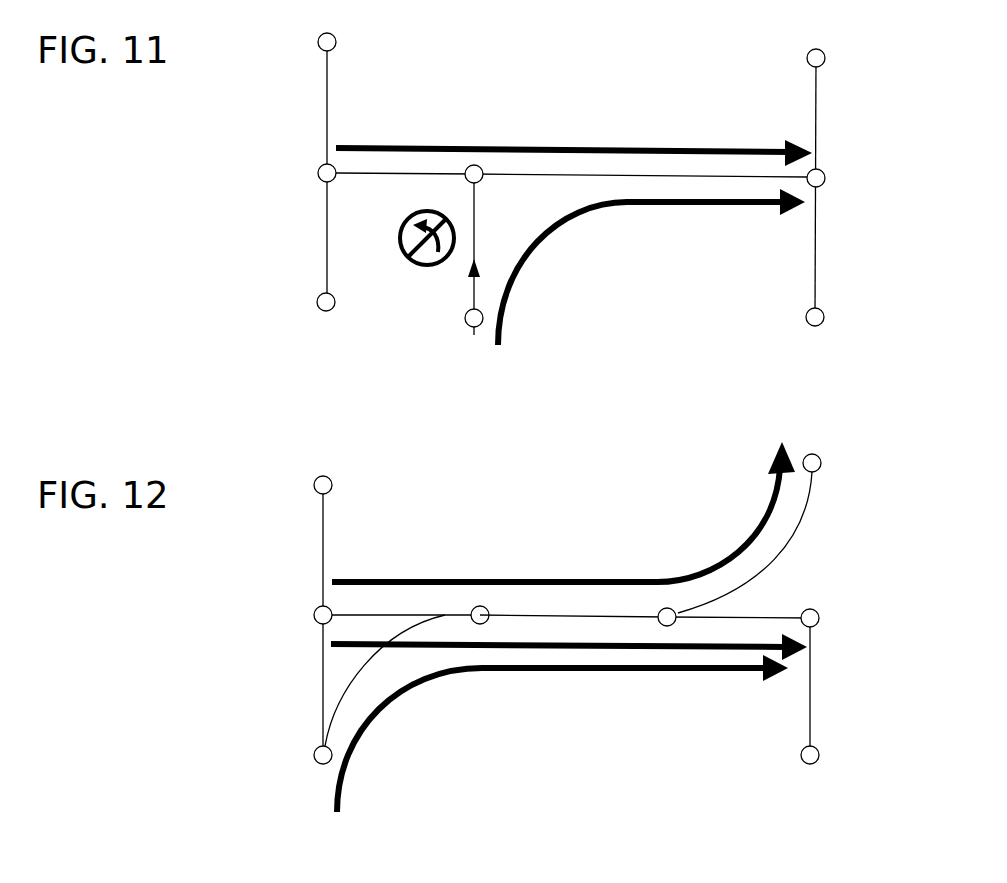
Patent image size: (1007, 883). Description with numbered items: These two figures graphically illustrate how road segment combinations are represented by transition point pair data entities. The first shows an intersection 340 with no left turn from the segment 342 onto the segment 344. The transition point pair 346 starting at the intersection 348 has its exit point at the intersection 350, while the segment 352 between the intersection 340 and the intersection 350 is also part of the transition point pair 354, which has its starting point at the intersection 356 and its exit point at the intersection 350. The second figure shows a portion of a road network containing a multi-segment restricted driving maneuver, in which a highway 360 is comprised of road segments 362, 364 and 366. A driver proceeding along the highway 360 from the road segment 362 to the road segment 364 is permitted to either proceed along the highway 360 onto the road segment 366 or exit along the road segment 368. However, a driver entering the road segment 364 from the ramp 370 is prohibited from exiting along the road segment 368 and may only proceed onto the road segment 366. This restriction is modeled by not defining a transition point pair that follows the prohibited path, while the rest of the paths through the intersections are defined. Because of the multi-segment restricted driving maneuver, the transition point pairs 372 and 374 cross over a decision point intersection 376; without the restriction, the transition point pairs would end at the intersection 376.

In FIG. 11, the intersection 340 is at (488, 168).
In FIG. 11, the segment 342 is at (463, 279).
In FIG. 11, the segment 344 is at (372, 180).
In FIG. 11, the transition point pair 346 is at (656, 209).
In FIG. 11, the intersection 348 is at (460, 321).
In FIG. 11, the intersection 350 is at (838, 180).
In FIG. 11, the segment 352 is at (568, 172).
In FIG. 11, the transition point pair 354 is at (400, 146).
In FIG. 11, the intersection 356 is at (312, 167).
In FIG. 12, the highway 360 is at (376, 610).
In FIG. 12, the road segment 362 is at (409, 610).
In FIG. 12, the road segment 364 is at (543, 608).
In FIG. 12, the road segment 366 is at (781, 608).
In FIG. 12, the road segment 368 is at (816, 489).
In FIG. 12, the ramp 370 is at (350, 667).
In FIG. 12, the transition point pair 372 is at (521, 678).
In FIG. 12, the transition point pair 374 is at (631, 575).
In FIG. 12, the intersection 376 is at (683, 603).